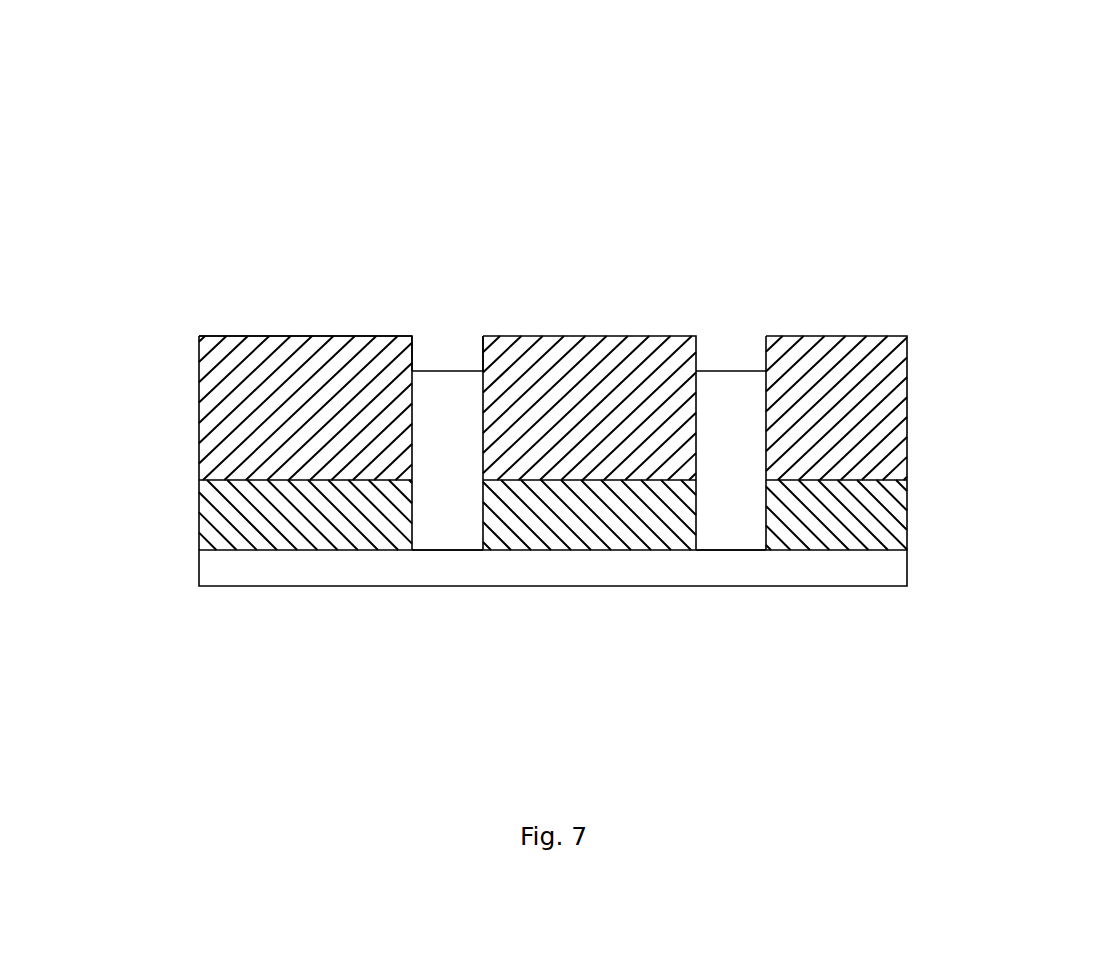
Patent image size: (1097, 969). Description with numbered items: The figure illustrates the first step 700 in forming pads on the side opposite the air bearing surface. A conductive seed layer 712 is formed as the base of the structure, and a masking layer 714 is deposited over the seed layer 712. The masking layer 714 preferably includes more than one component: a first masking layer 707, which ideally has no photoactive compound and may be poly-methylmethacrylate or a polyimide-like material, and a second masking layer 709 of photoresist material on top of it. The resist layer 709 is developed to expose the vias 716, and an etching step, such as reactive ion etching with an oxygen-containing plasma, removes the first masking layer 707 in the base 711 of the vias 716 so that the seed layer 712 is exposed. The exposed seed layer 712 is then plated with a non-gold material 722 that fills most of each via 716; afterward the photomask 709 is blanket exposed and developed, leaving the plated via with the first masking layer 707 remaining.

The first step 700 is at (182, 123).
The first masking layer 707 is at (323, 517).
The second masking layer 709 is at (198, 427).
The base of the vias 711 is at (589, 525).
The conductive seed layer 712 is at (212, 570).
The masking layer 714 is at (305, 317).
The vias 716 is at (423, 348).
The non-gold material 722 is at (462, 398).